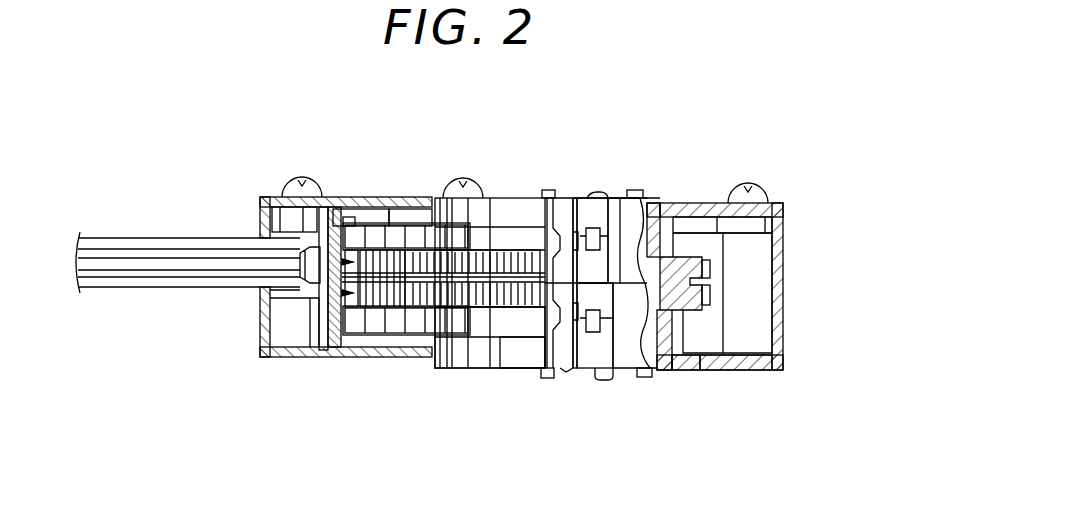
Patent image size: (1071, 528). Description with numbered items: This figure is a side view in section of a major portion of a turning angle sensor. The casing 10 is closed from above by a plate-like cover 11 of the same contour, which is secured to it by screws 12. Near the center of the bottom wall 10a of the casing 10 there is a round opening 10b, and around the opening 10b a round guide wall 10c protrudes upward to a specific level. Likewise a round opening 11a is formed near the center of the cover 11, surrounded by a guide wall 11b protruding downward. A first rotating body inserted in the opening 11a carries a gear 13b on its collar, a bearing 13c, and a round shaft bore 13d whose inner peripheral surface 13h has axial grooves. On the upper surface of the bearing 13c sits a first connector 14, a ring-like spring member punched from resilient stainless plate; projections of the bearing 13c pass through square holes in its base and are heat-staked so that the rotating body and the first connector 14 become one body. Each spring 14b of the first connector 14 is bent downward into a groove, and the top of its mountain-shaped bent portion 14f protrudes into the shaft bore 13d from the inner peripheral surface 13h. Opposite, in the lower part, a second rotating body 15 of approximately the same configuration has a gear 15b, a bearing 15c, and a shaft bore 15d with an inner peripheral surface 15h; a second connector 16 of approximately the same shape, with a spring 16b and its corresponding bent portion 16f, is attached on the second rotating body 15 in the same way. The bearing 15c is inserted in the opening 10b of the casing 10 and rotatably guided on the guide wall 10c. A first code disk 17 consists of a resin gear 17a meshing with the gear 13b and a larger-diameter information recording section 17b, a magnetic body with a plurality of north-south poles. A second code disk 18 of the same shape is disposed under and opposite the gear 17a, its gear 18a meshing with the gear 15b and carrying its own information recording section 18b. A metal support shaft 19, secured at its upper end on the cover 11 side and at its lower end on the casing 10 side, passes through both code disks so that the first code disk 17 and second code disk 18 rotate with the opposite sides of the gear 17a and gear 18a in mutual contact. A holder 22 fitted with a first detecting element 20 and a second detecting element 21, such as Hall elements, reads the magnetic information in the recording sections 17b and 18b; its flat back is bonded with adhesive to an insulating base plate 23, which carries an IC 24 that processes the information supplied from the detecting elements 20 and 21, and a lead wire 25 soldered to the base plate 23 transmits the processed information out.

The casing 10 is at (790, 340).
The bottom wall 10a is at (752, 370).
The round opening 10b is at (650, 378).
The round guide wall 10c is at (680, 370).
The cover 11 is at (510, 210).
The round opening 11a is at (660, 228).
The guide wall 11b is at (690, 222).
The screws 12 is at (757, 203).
The gear 13b is at (711, 268).
The bearing 13c is at (653, 250).
The shaft bore 13d is at (578, 224).
The inner peripheral surface 13h is at (640, 224).
The first connector 14 is at (557, 230).
The spring 14b is at (615, 240).
The mountain-shaped bent portion 14f is at (592, 240).
The second rotating body 15 is at (513, 358).
The gear 15b is at (711, 298).
The bearing 15c is at (664, 372).
The shaft bore 15d is at (560, 378).
The inner peripheral surface 15h is at (628, 376).
The second connector 16 is at (490, 370).
The spring 16b is at (598, 380).
The lower block flange 16f is at (567, 378).
The first code disk 17 is at (306, 258).
The gear 17a is at (410, 226).
The information recording section 17b is at (372, 226).
The second code disk 18 is at (320, 300).
The gear 18a is at (400, 348).
The information recording section 18b is at (372, 350).
The support shaft 19 is at (406, 340).
The first detecting element 20 is at (344, 226).
The second detecting element 21 is at (350, 348).
The holder 22 is at (340, 348).
The base plate 23 is at (330, 348).
The IC 24 is at (340, 293).
The lead wire 25 is at (137, 238).